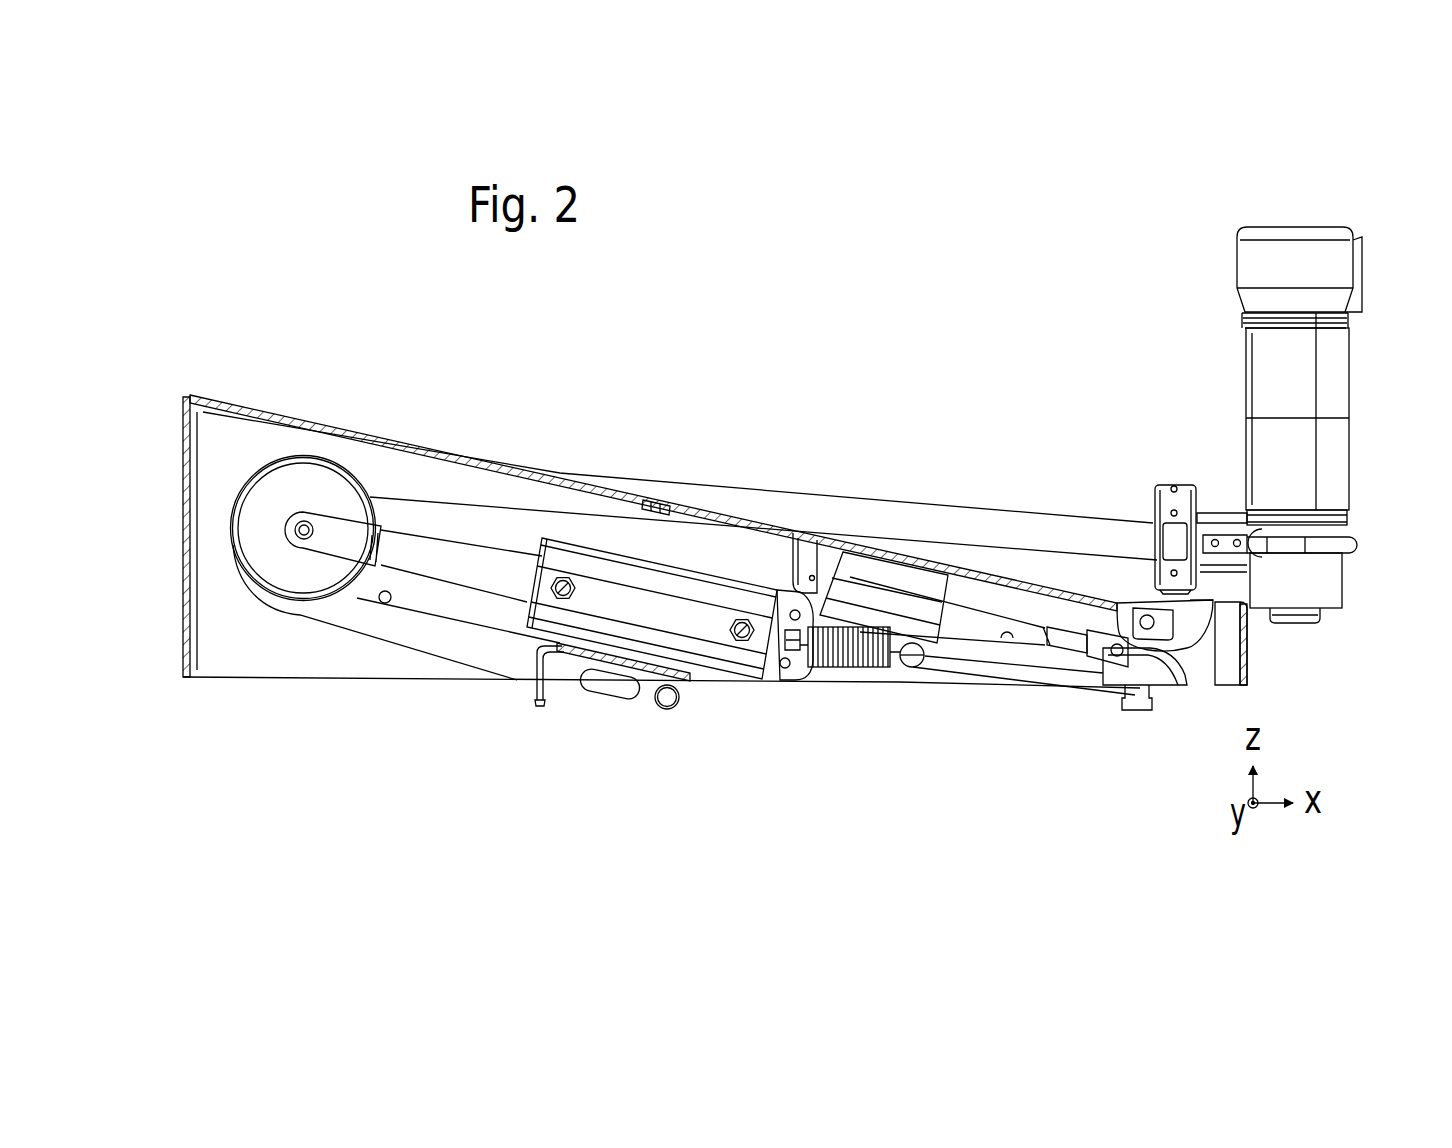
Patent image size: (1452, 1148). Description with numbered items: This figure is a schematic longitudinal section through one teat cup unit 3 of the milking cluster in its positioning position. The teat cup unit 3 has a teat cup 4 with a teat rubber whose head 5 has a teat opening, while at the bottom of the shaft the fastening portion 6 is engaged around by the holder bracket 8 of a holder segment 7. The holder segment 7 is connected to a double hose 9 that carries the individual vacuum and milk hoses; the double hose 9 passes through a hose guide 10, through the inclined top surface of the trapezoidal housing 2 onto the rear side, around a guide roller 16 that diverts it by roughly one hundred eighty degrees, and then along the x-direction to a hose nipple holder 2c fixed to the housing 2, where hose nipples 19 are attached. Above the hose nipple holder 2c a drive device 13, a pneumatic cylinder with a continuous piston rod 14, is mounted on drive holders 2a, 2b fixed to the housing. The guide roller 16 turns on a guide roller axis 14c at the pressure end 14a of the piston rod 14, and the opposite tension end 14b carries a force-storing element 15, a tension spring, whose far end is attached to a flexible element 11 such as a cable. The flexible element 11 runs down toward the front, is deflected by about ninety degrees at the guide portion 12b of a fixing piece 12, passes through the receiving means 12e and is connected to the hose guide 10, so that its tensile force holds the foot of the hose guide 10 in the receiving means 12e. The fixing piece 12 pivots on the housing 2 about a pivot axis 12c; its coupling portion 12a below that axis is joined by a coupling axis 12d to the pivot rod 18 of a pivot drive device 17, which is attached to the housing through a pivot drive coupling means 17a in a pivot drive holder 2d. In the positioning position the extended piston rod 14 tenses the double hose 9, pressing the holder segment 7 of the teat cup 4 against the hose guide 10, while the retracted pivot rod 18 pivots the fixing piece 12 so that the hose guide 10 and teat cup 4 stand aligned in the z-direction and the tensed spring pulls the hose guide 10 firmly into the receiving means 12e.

The housing 2 is at (230, 398).
The drive holder 2a is at (780, 605).
The drive holder 2b is at (527, 610).
The hose nipple holder 2c is at (547, 660).
The pivot drive holder 2d is at (818, 560).
The teat cup unit 3 is at (1049, 266).
The teat cup 4 is at (1353, 352).
The head 5 is at (1348, 227).
The fastening portion 6 is at (1317, 582).
The holder segment 7 is at (1214, 510).
The holder bracket 8 is at (1355, 553).
The double hose 9 is at (766, 484).
The hose guide 10 is at (1180, 482).
The flexible element 11 is at (955, 667).
The fixing piece 12 is at (1220, 629).
The coupling portion 12a is at (1145, 657).
The guide portion 12b is at (1137, 655).
The pivot axis 12c is at (1146, 615).
The coupling axis 12d is at (1112, 652).
The receiving means 12e is at (1205, 591).
The drive device 13 is at (698, 650).
The piston rod 14 is at (500, 575).
The pressure end 14a is at (345, 542).
The tension end 14b is at (770, 640).
The guide roller axis 14c is at (302, 521).
The force-storing element 15 is at (858, 667).
The guide roller 16 is at (280, 578).
The pivot drive device 17 is at (920, 590).
The pivot drive coupling means 17a is at (812, 574).
The pivot rod 18 is at (1020, 618).
The hose nipples 19 is at (598, 703).